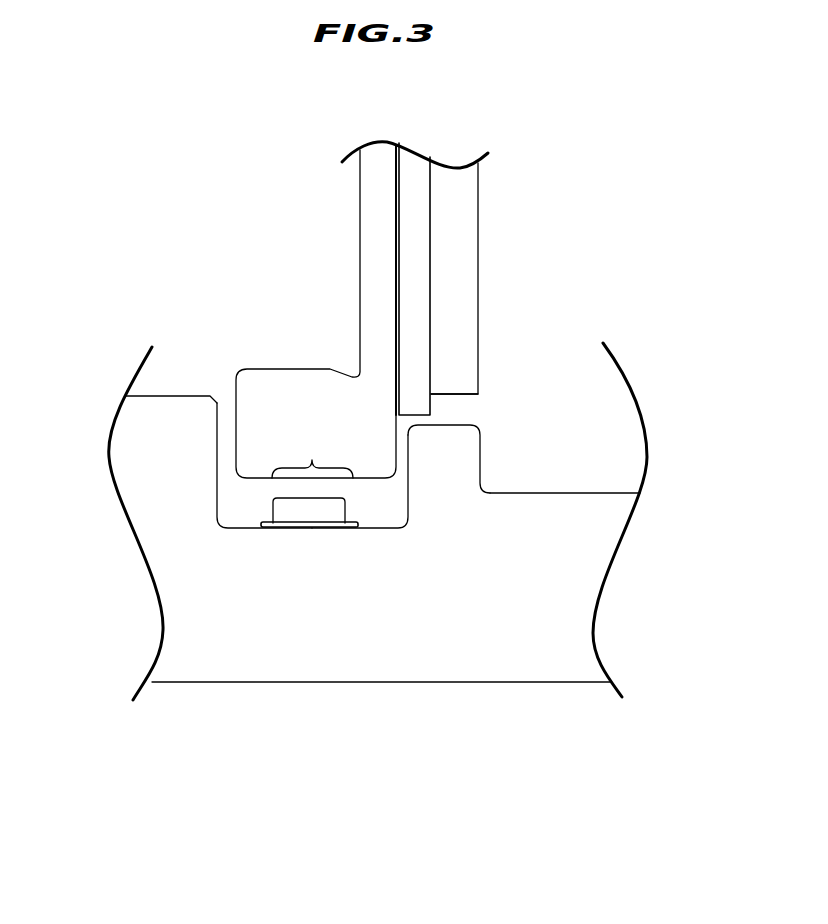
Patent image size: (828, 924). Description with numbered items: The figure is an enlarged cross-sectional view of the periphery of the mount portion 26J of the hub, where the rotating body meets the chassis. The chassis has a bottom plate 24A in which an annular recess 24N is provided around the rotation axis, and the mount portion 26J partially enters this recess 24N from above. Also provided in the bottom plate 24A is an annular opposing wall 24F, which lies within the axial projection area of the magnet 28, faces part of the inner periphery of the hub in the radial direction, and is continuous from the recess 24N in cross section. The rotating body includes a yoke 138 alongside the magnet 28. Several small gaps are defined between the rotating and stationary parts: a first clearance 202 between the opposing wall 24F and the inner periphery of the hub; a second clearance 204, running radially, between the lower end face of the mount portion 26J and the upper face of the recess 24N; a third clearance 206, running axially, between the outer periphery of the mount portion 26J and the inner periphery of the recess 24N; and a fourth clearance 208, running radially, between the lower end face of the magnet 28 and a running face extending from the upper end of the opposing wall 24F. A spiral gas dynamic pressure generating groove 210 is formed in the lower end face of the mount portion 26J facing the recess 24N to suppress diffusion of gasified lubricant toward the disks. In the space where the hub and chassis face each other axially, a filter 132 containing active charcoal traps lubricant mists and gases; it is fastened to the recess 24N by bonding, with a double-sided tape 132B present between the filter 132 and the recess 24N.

The mount portion 26J is at (272, 388).
The yoke 138 is at (413, 283).
The magnet 28 is at (455, 341).
The fourth clearance 208 is at (455, 412).
The first clearance 202 is at (403, 453).
The opposing wall 24F is at (412, 468).
The third clearance 206 is at (230, 442).
The gas dynamic pressure generating groove 210 is at (312, 454).
The recess 24N is at (242, 525).
The bottom plate 24A is at (258, 660).
The double-sided tape 132B is at (282, 527).
The filter 132 is at (328, 513).
The second clearance 204 is at (373, 505).